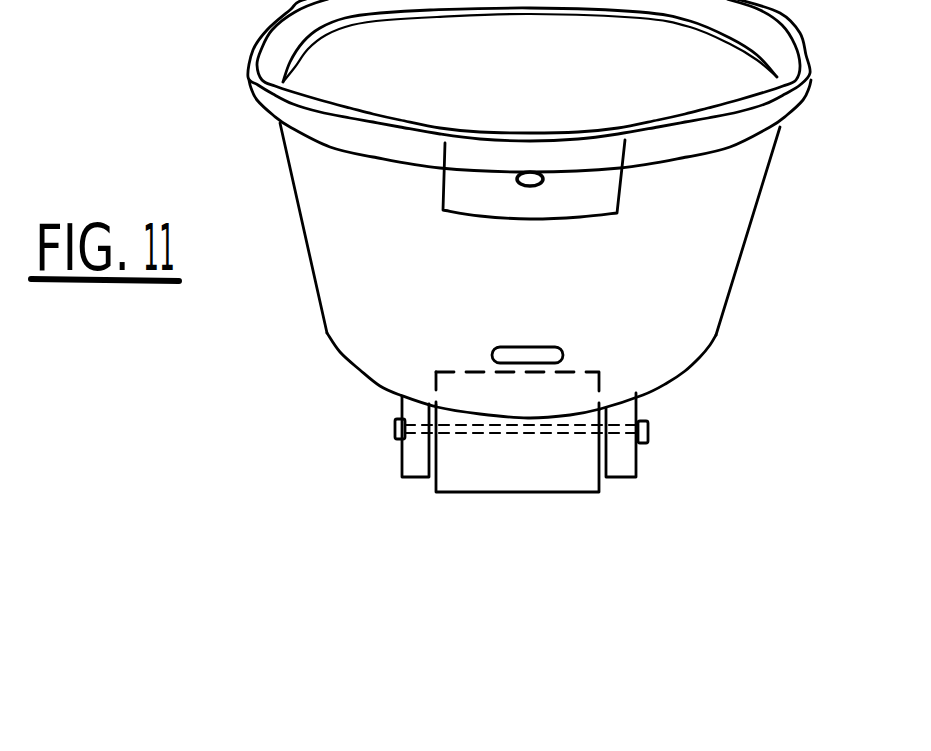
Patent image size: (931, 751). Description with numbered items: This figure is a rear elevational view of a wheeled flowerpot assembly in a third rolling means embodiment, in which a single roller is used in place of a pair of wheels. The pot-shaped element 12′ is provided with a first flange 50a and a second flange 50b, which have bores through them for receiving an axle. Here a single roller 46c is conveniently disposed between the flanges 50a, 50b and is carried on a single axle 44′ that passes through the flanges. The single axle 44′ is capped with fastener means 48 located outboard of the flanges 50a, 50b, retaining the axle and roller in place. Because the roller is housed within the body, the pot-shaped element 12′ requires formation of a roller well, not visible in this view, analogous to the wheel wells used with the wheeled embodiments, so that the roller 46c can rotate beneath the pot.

The pot-shaped element 12′ is at (745, 248).
The single axle 44′ is at (481, 433).
The single roller 46c is at (537, 483).
The fastener means 48 is at (395, 428).
The first flange 50a is at (413, 467).
The second flange 50b is at (619, 468).